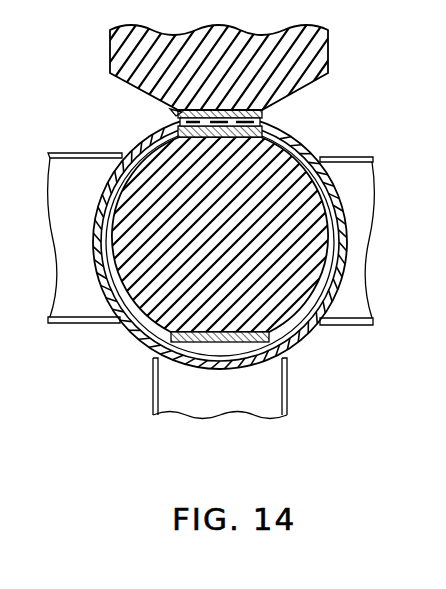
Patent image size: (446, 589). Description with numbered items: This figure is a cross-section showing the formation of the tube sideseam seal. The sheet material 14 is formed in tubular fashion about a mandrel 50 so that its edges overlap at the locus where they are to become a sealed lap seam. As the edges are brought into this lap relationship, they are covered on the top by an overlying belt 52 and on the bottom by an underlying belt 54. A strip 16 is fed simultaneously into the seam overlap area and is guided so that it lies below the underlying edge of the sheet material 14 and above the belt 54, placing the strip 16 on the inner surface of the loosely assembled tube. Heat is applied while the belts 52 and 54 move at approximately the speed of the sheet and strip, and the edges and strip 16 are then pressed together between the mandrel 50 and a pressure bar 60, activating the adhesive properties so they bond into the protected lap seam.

The sheet material 14 is at (135, 153).
The strip 16 is at (176, 113).
The mandrel 50 is at (121, 318).
The overlying belt 52 is at (264, 120).
The underlying belt 54 is at (208, 140).
The pressure bar 60 is at (329, 56).